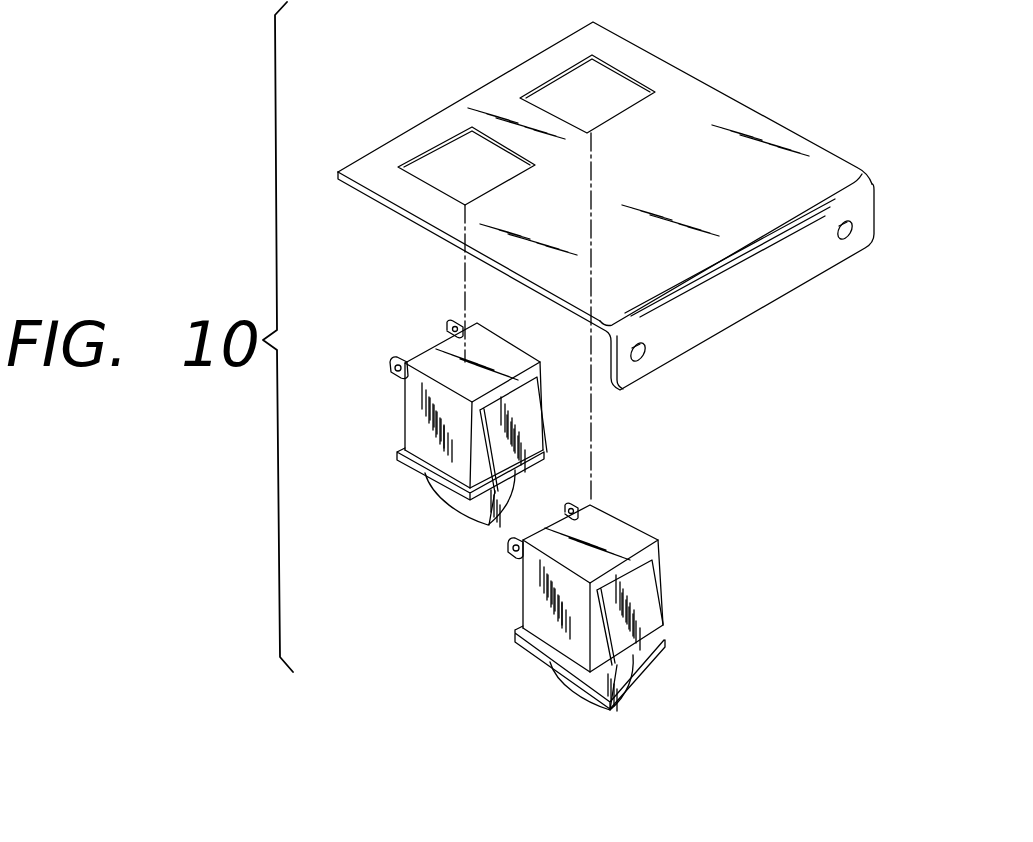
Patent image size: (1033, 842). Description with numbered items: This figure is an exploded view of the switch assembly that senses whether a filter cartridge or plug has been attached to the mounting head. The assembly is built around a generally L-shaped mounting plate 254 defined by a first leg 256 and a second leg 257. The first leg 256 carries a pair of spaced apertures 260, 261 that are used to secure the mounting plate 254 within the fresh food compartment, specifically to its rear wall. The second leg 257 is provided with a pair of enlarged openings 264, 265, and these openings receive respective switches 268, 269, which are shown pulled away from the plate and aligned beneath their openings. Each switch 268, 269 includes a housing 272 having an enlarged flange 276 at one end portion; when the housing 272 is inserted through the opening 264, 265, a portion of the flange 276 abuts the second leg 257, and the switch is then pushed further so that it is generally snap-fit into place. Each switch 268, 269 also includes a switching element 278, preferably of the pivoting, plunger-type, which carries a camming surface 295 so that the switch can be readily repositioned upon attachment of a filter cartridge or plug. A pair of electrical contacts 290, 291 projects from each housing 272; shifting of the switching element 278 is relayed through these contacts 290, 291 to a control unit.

The mounting plate 254 is at (626, 257).
The first leg 256 is at (738, 297).
The second leg 257 is at (688, 102).
The aperture 260 is at (847, 242).
The aperture 261 is at (643, 357).
The opening 264 is at (603, 66).
The opening 265 is at (430, 160).
The switch 268 is at (577, 601).
The switch 269 is at (423, 409).
The housing 272 is at (532, 605).
The flange 276 is at (517, 635).
The switching element 278 is at (627, 683).
The electrical contact 290 is at (448, 325).
The electrical contact 291 is at (393, 360).
The camming surface 295 is at (575, 680).